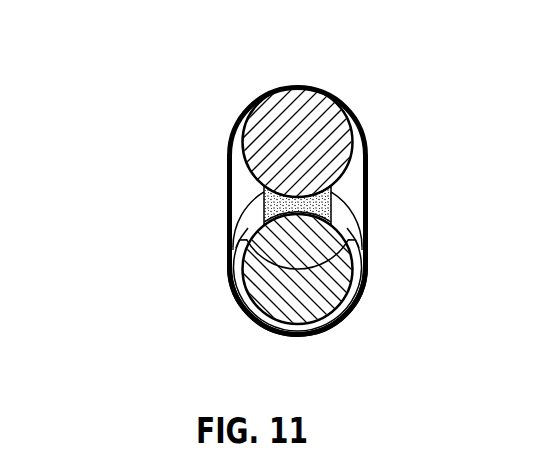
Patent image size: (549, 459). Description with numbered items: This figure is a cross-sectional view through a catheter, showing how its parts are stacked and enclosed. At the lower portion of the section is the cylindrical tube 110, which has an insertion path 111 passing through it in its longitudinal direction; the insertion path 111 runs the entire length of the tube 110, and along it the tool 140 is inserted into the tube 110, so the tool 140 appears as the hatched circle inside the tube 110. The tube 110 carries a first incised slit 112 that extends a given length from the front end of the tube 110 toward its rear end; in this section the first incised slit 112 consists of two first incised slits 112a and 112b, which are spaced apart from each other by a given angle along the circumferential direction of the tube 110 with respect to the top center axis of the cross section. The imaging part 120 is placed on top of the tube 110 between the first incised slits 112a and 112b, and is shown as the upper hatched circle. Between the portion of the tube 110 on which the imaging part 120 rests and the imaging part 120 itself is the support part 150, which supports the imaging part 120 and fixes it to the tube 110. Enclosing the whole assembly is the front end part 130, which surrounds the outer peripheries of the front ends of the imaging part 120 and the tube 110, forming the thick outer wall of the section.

The tube 110 is at (350, 317).
The insertion path 111 is at (355, 289).
The first incised slit 112 is at (122, 220).
The first incised slit 112a is at (252, 226).
The first incised slit 112b is at (343, 222).
The imaging part 120 is at (293, 100).
The front end part 130 is at (368, 166).
The tool 140 is at (297, 303).
The support part 150 is at (331, 198).